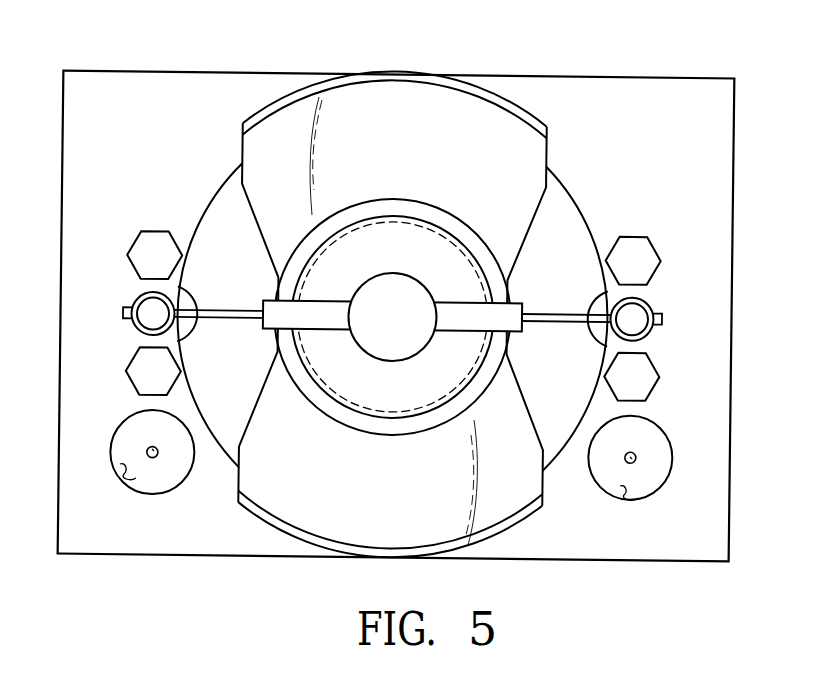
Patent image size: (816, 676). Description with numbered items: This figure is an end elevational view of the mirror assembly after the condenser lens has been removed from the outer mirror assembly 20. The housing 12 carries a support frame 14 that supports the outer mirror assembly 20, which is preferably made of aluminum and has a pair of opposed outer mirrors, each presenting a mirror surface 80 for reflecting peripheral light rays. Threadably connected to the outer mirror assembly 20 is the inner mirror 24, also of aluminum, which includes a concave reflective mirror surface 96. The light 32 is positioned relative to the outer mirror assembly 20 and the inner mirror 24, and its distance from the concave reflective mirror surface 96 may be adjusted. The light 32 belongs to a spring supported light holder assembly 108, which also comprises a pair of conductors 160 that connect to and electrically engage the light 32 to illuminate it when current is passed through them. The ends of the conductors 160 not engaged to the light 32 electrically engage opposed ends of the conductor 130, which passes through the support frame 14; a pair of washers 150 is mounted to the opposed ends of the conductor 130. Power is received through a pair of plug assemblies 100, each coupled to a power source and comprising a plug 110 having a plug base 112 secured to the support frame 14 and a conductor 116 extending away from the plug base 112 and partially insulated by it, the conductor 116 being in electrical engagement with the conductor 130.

The housing 12 is at (405, 299).
The support frame 14 is at (651, 159).
The outer mirror assembly 20 is at (258, 241).
The inner mirror 24 is at (284, 276).
The light 32 is at (417, 280).
The mirror surface 80 is at (442, 181).
The concave reflective mirror surface 96 is at (367, 391).
The plug assembly 100 is at (100, 450).
The light holder assembly 108 is at (536, 303).
The plug 110 is at (155, 512).
The plug base 112 is at (128, 473).
The conductor 116 is at (154, 447).
The conductor 130 is at (152, 321).
The washer 150 is at (131, 302).
The conductor 160 is at (226, 322).